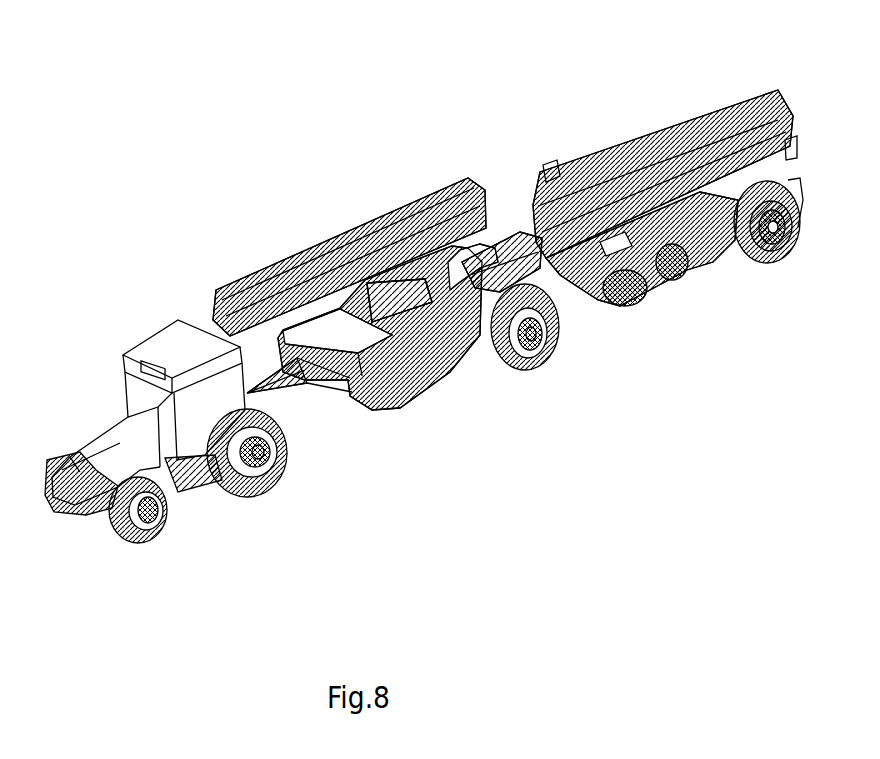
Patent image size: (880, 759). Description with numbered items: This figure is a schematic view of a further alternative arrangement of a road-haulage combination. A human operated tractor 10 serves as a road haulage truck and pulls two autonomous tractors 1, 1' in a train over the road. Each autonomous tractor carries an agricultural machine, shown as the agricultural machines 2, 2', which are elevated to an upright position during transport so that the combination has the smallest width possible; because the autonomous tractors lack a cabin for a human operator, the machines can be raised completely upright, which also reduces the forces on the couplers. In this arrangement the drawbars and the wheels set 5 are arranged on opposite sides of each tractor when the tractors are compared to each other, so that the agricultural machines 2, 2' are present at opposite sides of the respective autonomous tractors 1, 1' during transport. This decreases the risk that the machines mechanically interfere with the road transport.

The autonomous tractor 1 is at (391, 426).
The autonomous tractor 1' is at (655, 390).
The agricultural machine 2 is at (349, 183).
The agricultural machine 2' is at (664, 144).
The wheels set 5 is at (793, 243).
The human operated tractor 10 is at (200, 420).